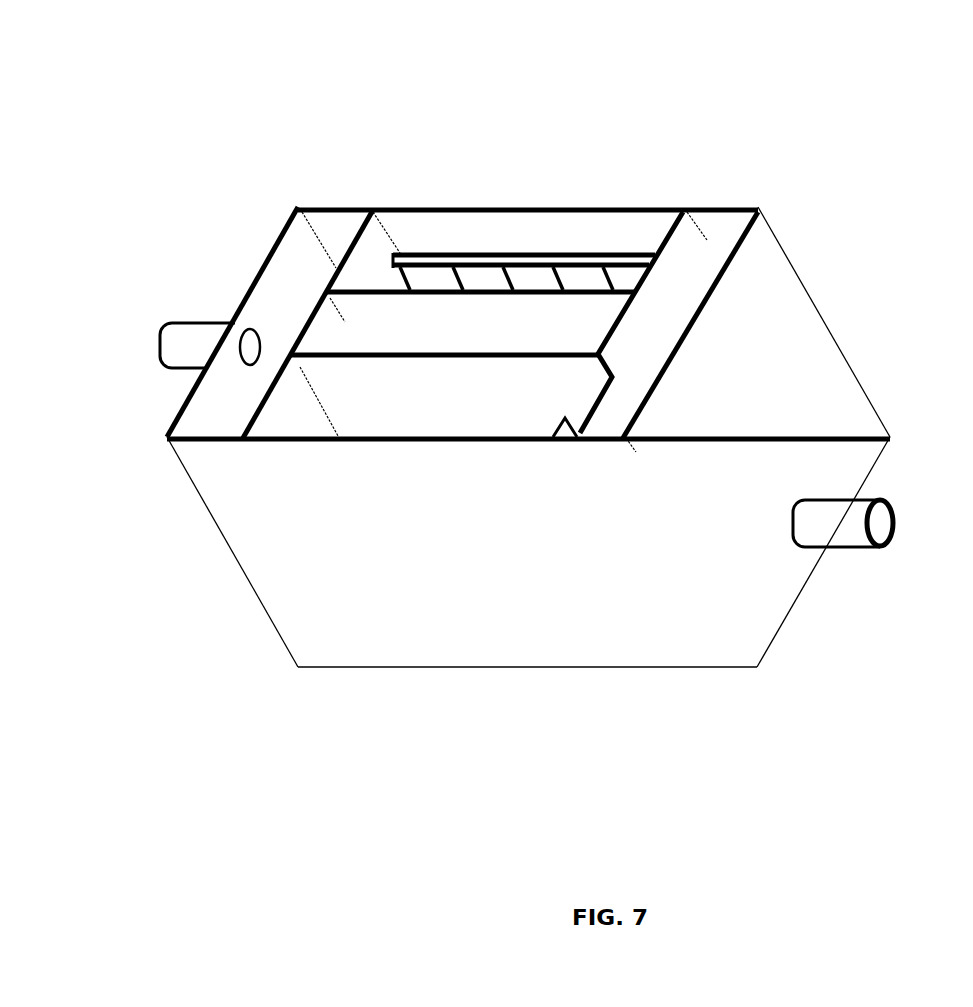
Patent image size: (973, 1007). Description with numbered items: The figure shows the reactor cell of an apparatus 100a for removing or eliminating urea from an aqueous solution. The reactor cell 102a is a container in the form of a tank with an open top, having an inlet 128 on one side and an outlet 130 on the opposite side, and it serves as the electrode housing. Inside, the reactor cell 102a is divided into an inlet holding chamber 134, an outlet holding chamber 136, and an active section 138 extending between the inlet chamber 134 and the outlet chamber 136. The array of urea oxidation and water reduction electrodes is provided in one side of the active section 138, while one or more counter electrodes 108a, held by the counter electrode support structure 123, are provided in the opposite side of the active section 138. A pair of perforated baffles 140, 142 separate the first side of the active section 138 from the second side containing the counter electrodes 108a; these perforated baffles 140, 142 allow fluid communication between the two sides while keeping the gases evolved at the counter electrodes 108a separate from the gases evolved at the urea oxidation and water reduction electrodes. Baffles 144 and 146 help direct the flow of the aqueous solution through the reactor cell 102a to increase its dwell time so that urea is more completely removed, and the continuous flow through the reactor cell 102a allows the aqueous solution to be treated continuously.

The apparatus 100a is at (382, 727).
The reactor cell 102a is at (335, 607).
The counter electrode 108a is at (577, 277).
The counter electrode support structure 123 is at (430, 265).
The inlet 128 is at (194, 344).
The outlet 130 is at (843, 532).
The inlet holding chamber 134 is at (218, 396).
The outlet holding chamber 136 is at (668, 348).
The active section 138 is at (497, 224).
The perforated baffle 140 is at (366, 398).
The perforated baffle 142 is at (503, 322).
The baffle 144 is at (374, 265).
The baffle 146 is at (692, 265).